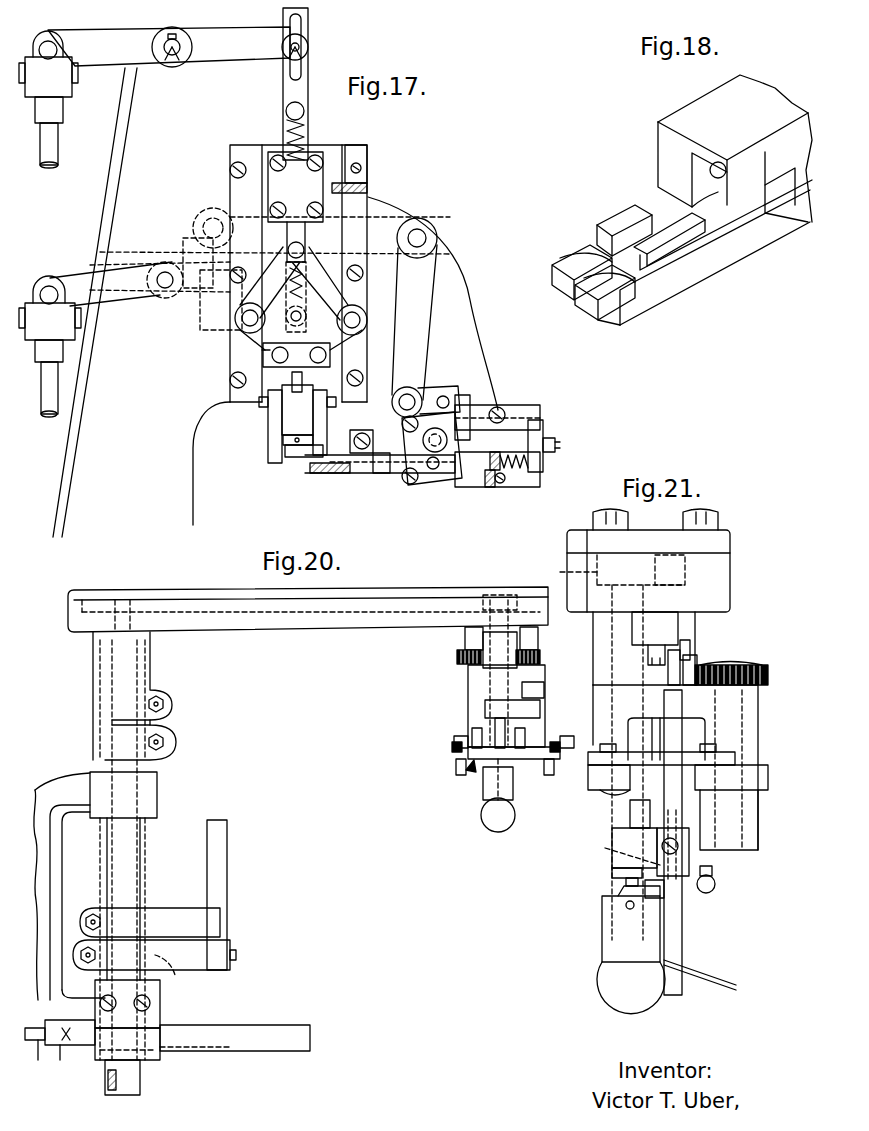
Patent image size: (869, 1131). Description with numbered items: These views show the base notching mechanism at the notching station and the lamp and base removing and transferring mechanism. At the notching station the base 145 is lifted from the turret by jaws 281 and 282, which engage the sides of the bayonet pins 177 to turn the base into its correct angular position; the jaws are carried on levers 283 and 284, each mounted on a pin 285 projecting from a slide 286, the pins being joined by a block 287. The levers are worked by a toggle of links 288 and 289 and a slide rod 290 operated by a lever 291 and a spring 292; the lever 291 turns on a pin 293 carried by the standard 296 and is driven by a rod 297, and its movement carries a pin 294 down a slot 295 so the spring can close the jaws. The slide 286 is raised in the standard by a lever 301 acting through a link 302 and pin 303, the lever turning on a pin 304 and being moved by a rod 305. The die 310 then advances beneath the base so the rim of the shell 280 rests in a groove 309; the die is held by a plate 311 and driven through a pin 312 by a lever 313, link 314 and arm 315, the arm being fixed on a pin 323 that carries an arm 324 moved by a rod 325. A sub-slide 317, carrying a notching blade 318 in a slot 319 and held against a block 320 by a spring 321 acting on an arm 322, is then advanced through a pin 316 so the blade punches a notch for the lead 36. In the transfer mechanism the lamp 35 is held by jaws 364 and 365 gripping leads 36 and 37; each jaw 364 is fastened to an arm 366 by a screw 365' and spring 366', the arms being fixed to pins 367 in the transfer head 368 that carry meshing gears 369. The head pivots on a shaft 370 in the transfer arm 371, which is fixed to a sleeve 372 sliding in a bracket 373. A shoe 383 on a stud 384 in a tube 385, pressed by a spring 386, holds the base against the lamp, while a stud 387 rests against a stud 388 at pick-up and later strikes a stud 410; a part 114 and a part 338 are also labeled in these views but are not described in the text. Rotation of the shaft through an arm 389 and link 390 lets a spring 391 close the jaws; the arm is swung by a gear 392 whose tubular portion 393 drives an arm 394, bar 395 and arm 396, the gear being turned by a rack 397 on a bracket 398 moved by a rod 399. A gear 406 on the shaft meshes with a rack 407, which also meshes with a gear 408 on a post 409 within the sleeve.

In FIG. 20, the lamp 35 is at (492, 832).
In FIG. 21, the lamp 35 is at (598, 986).
In FIG. 21, the lead 36 is at (705, 974).
In FIG. 21, the lead 37 is at (626, 881).
In FIG. 21, the holder 114 is at (618, 891).
In FIG. 17, the base 145 is at (284, 458).
In FIG. 21, the base 145 is at (604, 940).
In FIG. 17, the bayonet pins 177 is at (292, 440).
In FIG. 21, the bayonet pins 177 is at (626, 908).
In FIG. 17, the shell 280 is at (300, 468).
In FIG. 17, the jaw 281 is at (268, 425).
In FIG. 17, the jaw 282 is at (327, 428).
In FIG. 17, the lever 283 is at (262, 350).
In FIG. 17, the lever 284 is at (331, 351).
In FIG. 17, the pin 285 is at (296, 326).
In FIG. 17, the slide 286 is at (342, 183).
In FIG. 17, the block 287 is at (262, 372).
In FIG. 17, the link 288 is at (240, 308).
In FIG. 17, the link 289 is at (342, 282).
In FIG. 17, the slide rod 290 is at (310, 85).
In FIG. 17, the lever 291 is at (228, 62).
In FIG. 17, the spring 292 is at (312, 131).
In FIG. 17, the pin 293 is at (185, 38).
In FIG. 17, the pin 294 is at (308, 45).
In FIG. 17, the slot 295 is at (292, 76).
In FIG. 17, the standard 296 is at (112, 170).
In FIG. 17, the rod 297 is at (62, 138).
In FIG. 17, the lever 301 is at (90, 272).
In FIG. 17, the link 302 is at (335, 303).
In FIG. 17, the pin 303 is at (245, 323).
In FIG. 17, the pin 304 is at (162, 292).
In FIG. 17, the rod 305 is at (46, 410).
In FIG. 17, the groove 309 is at (350, 444).
In FIG. 18, the groove 309 is at (630, 318).
In FIG. 17, the die 310 is at (378, 473).
In FIG. 18, the die 310 is at (726, 262).
In FIG. 17, the plate 311 is at (508, 412).
In FIG. 17, the pin 312 is at (433, 470).
In FIG. 17, the lever 313 is at (460, 400).
In FIG. 17, the link 314 is at (437, 390).
In FIG. 17, the arm 315 is at (430, 318).
In FIG. 17, the pin 316 is at (455, 482).
In FIG. 17, the sub-slide 317 is at (530, 425).
In FIG. 18, the sub-slide 317 is at (668, 113).
In FIG. 17, the notching blade 318 is at (334, 474).
In FIG. 18, the notching blade 318 is at (686, 204).
In FIG. 18, the slot 319 is at (646, 230).
In FIG. 17, the block 320 is at (392, 474).
In FIG. 18, the block 320 is at (784, 205).
In FIG. 17, the spring 321 is at (522, 472).
In FIG. 17, the arm 322 is at (546, 455).
In FIG. 17, the pin 323 is at (426, 236).
In FIG. 17, the arm 324 is at (225, 215).
In FIG. 17, the rod 325 is at (225, 330).
In FIG. 20, the nut 338 is at (538, 640).
In FIG. 20, the jaws 364 is at (483, 780).
In FIG. 21, the jaws 364 is at (683, 934).
In FIG. 20, the jaws 365 is at (494, 762).
In FIG. 21, the jaws 365 is at (639, 842).
In FIG. 20, the screw 365' is at (504, 735).
In FIG. 20, the arm 366 is at (503, 731).
In FIG. 21, the arm 366 is at (612, 845).
In FIG. 20, the spring 366' is at (500, 759).
In FIG. 21, the pin 367 is at (745, 722).
In FIG. 20, the transfer head 368 is at (468, 700).
In FIG. 21, the transfer head 368 is at (759, 750).
In FIG. 20, the gear 369 is at (457, 658).
In FIG. 21, the gear 369 is at (768, 676).
In FIG. 20, the shaft 370 is at (490, 674).
In FIG. 21, the shaft 370 is at (612, 680).
In FIG. 20, the transfer arm 371 is at (374, 630).
In FIG. 21, the transfer arm 371 is at (731, 583).
In FIG. 20, the sleeve 372 is at (141, 840).
In FIG. 20, the bracket 373 is at (158, 790).
In FIG. 21, the shoe 383 is at (664, 895).
In FIG. 21, the stud 384 is at (614, 852).
In FIG. 21, the tube 385 is at (660, 804).
In FIG. 21, the spring 386 is at (672, 818).
In FIG. 21, the stud 387 is at (700, 660).
In FIG. 20, the stud 388 is at (578, 663).
In FIG. 21, the stud 388 is at (648, 660).
In FIG. 20, the arm 389 is at (540, 705).
In FIG. 21, the arm 389 is at (596, 790).
In FIG. 20, the link 390 is at (540, 682).
In FIG. 21, the link 390 is at (684, 752).
In FIG. 20, the spring 391 is at (468, 770).
In FIG. 21, the spring 391 is at (716, 883).
In FIG. 20, the gear 392 is at (170, 1058).
In FIG. 20, the tubular portion 393 is at (176, 976).
In FIG. 20, the arm 394 is at (210, 948).
In FIG. 20, the bar 395 is at (228, 876).
In FIG. 20, the arm 396 is at (180, 908).
In FIG. 20, the rack 397 is at (258, 1025).
In FIG. 20, the bracket 398 is at (222, 1052).
In FIG. 20, the rod 399 is at (45, 1070).
In FIG. 20, the gear 406 is at (512, 598).
In FIG. 20, the rack 407 is at (440, 605).
In FIG. 21, the rack 407 is at (690, 570).
In FIG. 20, the gear 408 is at (138, 604).
In FIG. 20, the post 409 is at (128, 670).
In FIG. 20, the stud 410 is at (465, 641).
In FIG. 21, the stud 410 is at (688, 650).